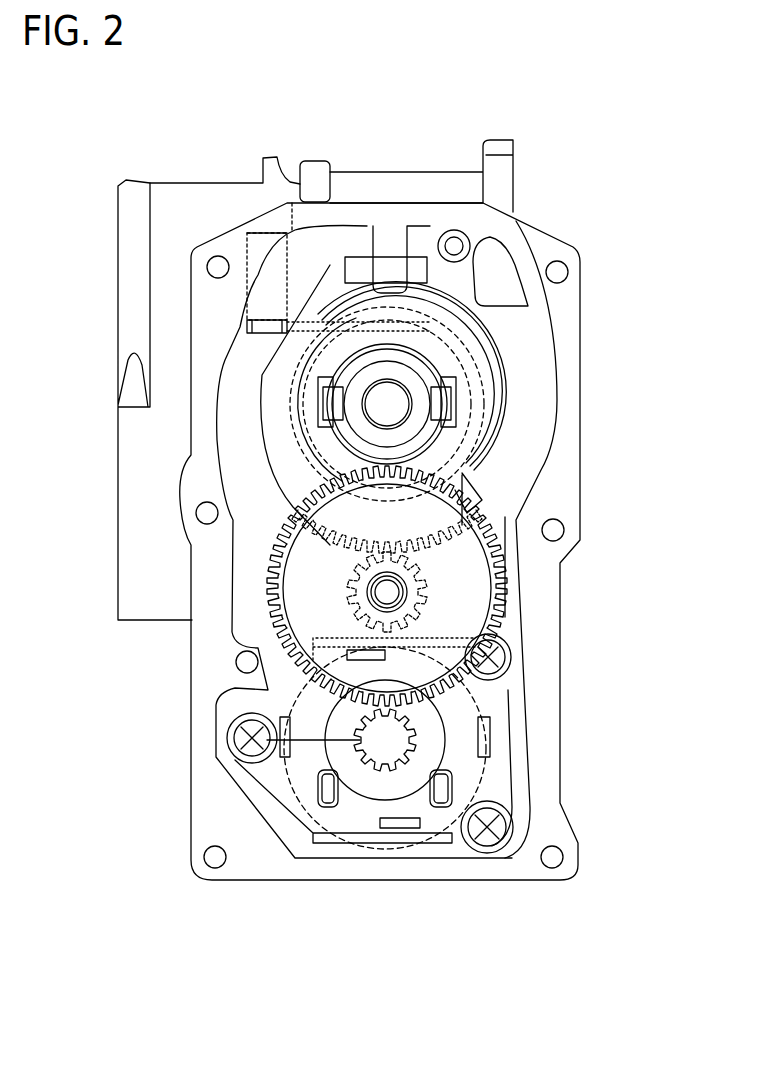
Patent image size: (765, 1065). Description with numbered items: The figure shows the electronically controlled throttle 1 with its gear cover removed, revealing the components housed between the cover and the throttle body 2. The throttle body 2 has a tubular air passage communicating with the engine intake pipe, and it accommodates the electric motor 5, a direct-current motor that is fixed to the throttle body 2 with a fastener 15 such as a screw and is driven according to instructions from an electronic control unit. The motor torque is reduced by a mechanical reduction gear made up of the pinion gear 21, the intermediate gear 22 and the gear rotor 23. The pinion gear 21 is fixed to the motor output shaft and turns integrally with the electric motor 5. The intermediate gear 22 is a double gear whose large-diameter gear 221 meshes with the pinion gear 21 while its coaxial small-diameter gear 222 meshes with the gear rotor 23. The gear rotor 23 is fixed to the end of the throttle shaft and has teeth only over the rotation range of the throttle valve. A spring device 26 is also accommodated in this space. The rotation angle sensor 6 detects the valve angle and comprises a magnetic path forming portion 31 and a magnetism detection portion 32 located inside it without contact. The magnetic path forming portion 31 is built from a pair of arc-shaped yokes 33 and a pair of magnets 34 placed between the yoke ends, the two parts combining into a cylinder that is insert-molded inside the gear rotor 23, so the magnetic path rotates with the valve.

The electronically controlled throttle 1 is at (190, 140).
The throttle body 2 is at (580, 290).
The electric motor 5 is at (290, 845).
The rotation angle sensor 6 is at (441, 346).
The fastener 15 is at (512, 660).
The pinion gear 21 is at (267, 740).
The intermediate gear 22 is at (255, 588).
The large-diameter gear 221 is at (283, 538).
The small-diameter gear 222 is at (350, 600).
The gear rotor 23 is at (250, 460).
The spring device 26 is at (258, 335).
The magnetic path forming portion 31 is at (348, 430).
The magnetism detection portion 32 is at (455, 375).
The yokes 33 is at (340, 356).
The magnets 34 is at (320, 403).